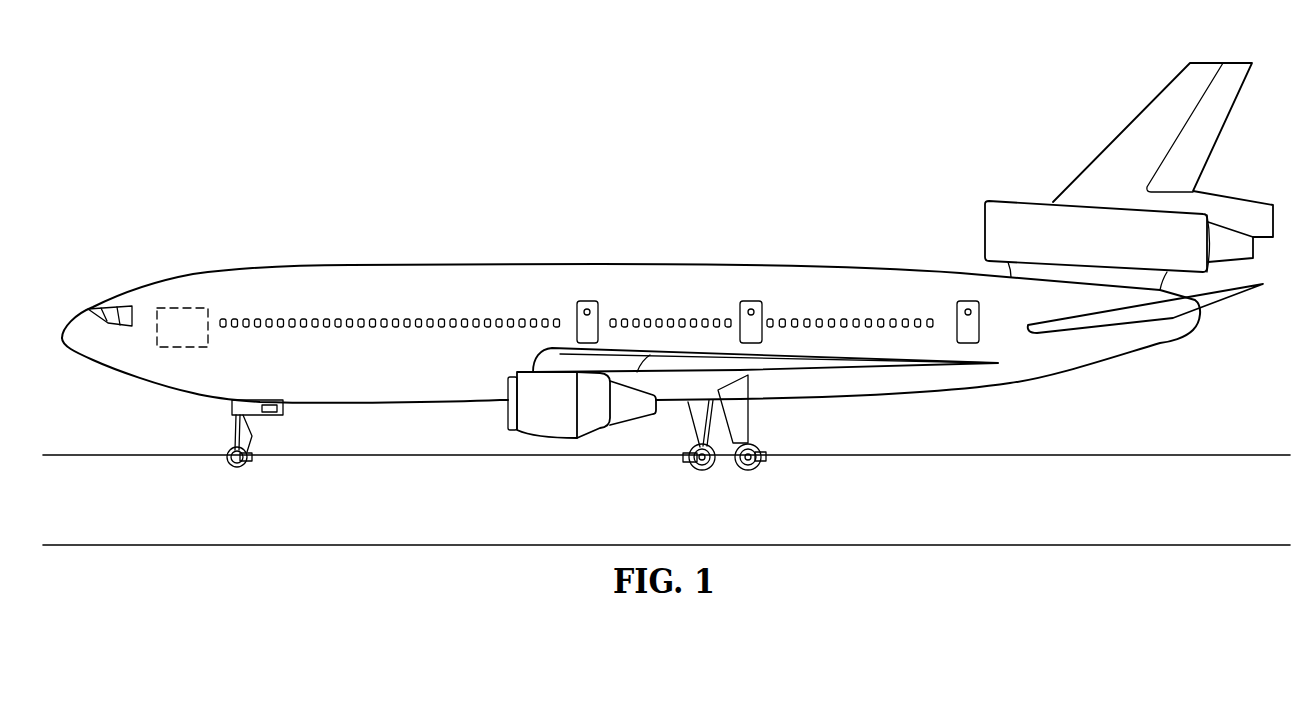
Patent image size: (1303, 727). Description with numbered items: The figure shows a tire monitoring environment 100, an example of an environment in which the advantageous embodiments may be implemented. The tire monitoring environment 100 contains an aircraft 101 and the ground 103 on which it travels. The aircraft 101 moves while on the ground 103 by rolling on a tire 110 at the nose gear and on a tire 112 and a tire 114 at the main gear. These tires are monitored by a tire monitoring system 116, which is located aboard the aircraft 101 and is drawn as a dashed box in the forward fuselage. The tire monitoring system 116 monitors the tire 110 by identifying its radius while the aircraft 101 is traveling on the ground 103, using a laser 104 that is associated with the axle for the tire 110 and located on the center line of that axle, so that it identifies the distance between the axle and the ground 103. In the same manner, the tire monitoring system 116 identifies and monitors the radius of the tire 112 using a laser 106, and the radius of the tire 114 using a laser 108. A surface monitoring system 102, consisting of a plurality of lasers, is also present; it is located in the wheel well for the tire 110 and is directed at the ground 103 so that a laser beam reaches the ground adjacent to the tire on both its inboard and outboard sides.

The tire monitoring environment 100 is at (326, 152).
The aircraft 101 is at (543, 265).
The surface monitoring system 102 is at (265, 405).
The ground 103 is at (128, 490).
The laser 104 is at (247, 468).
The laser 106 is at (683, 458).
The laser 108 is at (753, 463).
The tire 110 is at (227, 466).
The tire 112 is at (713, 470).
The tire 114 is at (733, 470).
The tire monitoring system 116 is at (183, 305).